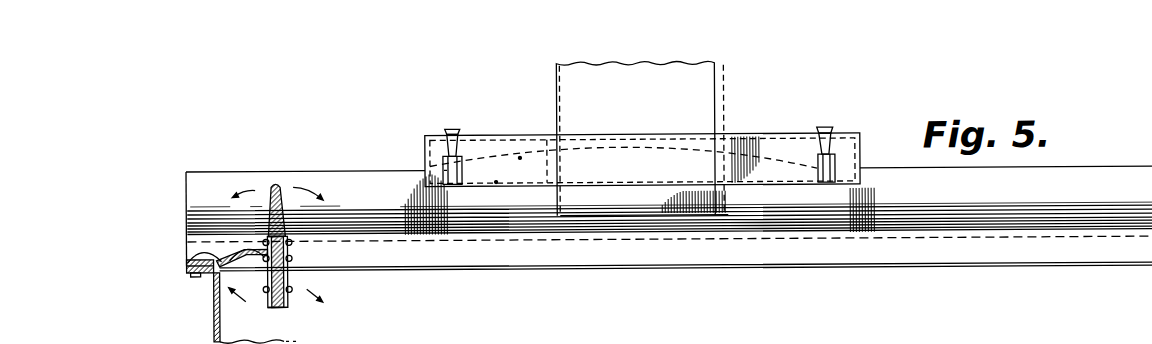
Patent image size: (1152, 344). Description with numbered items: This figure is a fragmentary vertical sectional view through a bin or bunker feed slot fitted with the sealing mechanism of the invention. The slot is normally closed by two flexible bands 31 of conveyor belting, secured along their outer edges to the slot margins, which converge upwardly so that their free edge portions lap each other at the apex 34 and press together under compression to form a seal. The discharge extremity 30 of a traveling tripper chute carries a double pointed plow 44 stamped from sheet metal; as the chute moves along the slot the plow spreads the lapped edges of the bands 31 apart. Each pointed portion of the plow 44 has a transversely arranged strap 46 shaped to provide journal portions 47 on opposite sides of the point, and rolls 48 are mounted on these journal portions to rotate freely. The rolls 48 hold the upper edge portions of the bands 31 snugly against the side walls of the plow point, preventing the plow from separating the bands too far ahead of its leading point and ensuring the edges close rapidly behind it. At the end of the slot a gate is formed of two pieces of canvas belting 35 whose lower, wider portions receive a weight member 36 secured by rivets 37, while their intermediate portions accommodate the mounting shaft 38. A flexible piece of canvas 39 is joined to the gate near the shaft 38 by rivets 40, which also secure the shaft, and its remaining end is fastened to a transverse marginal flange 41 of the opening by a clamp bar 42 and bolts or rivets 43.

The discharge extremity of traveling tripper chute 30 is at (730, 110).
The flexible bands 31 is at (669, 214).
The apex 34 is at (1095, 172).
The pieces of canvas belting 35 is at (285, 259).
The weight member 36 is at (281, 310).
The rivets 37 is at (266, 304).
The mounting shaft 38 is at (293, 250).
The flexible piece of canvas 39 is at (203, 252).
The rivets 40 is at (289, 263).
The transverse marginal flange 41 is at (194, 278).
The clamp bar 42 is at (186, 266).
The bolts or rivets 43 is at (207, 279).
The double pointed plow 44 is at (515, 136).
The strap 46 is at (640, 156).
The journal portions 47 is at (425, 152).
The rolls 48 is at (462, 178).